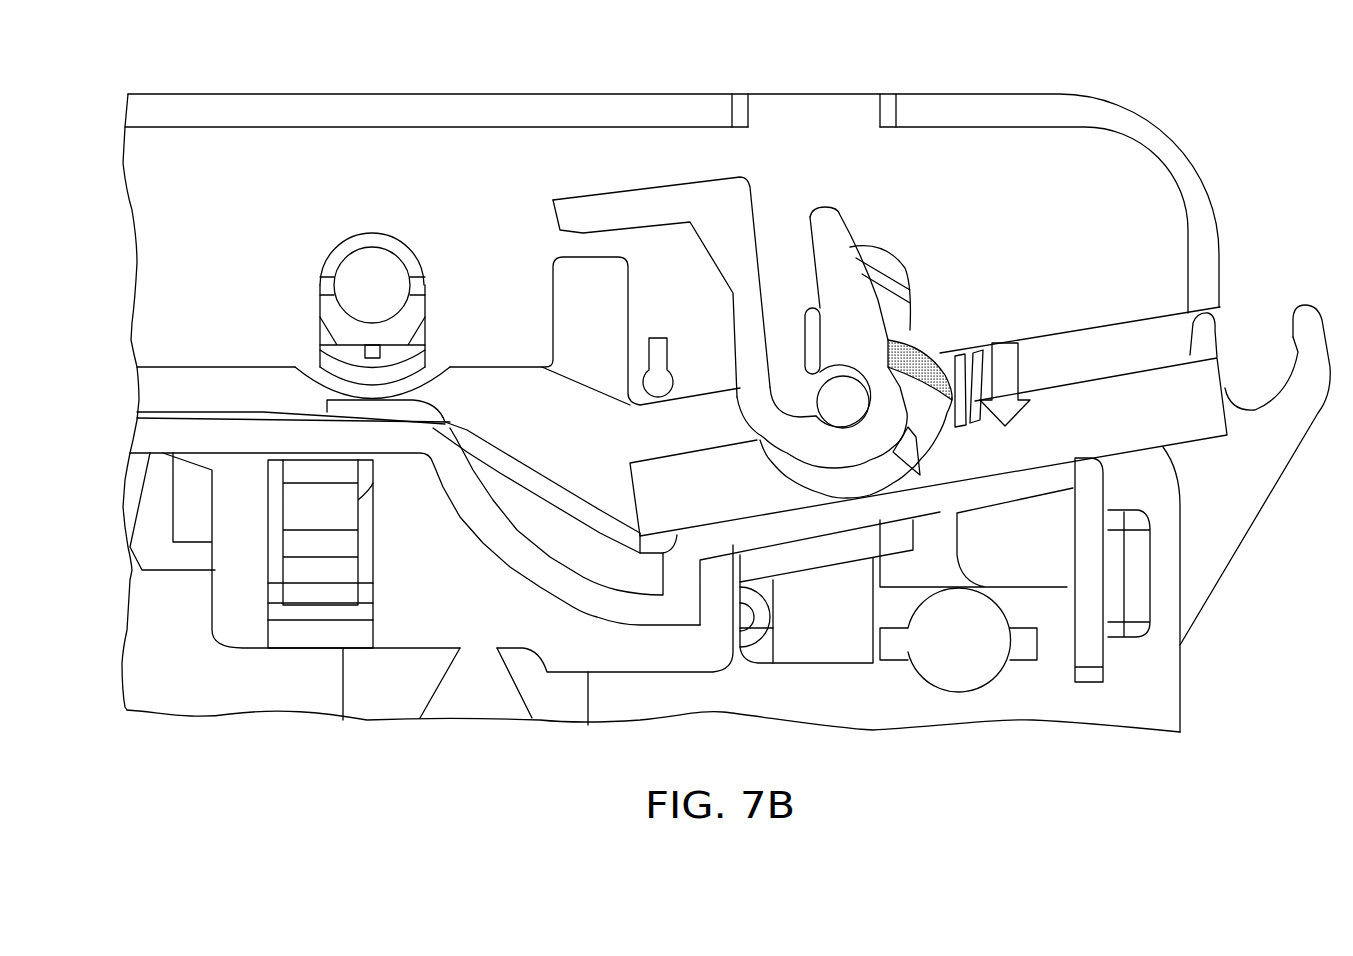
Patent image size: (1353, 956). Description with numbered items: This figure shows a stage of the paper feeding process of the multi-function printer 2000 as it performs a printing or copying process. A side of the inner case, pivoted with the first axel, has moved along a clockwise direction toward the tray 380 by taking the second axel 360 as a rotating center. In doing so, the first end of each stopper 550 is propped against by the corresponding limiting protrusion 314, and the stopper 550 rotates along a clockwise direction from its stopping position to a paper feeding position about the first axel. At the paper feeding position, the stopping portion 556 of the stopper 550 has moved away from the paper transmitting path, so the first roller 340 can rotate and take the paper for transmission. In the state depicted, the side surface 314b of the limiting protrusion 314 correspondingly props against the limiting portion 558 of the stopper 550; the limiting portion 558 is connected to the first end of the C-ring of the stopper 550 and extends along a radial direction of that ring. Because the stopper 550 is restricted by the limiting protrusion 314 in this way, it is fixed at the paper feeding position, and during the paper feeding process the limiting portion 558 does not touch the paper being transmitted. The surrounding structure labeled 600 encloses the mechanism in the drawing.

The limiting protrusion 314 is at (772, 412).
The side surface of the limiting protrusion 314b is at (823, 327).
The first roller 340 is at (845, 490).
The second axel 360 is at (373, 267).
The tray 380 is at (783, 523).
The stopper 550 is at (726, 219).
The stopping portion 556 is at (597, 207).
The limiting portion 558 is at (828, 223).
The housing 600 is at (1215, 171).
The multi-function printer 2000 is at (1220, 805).